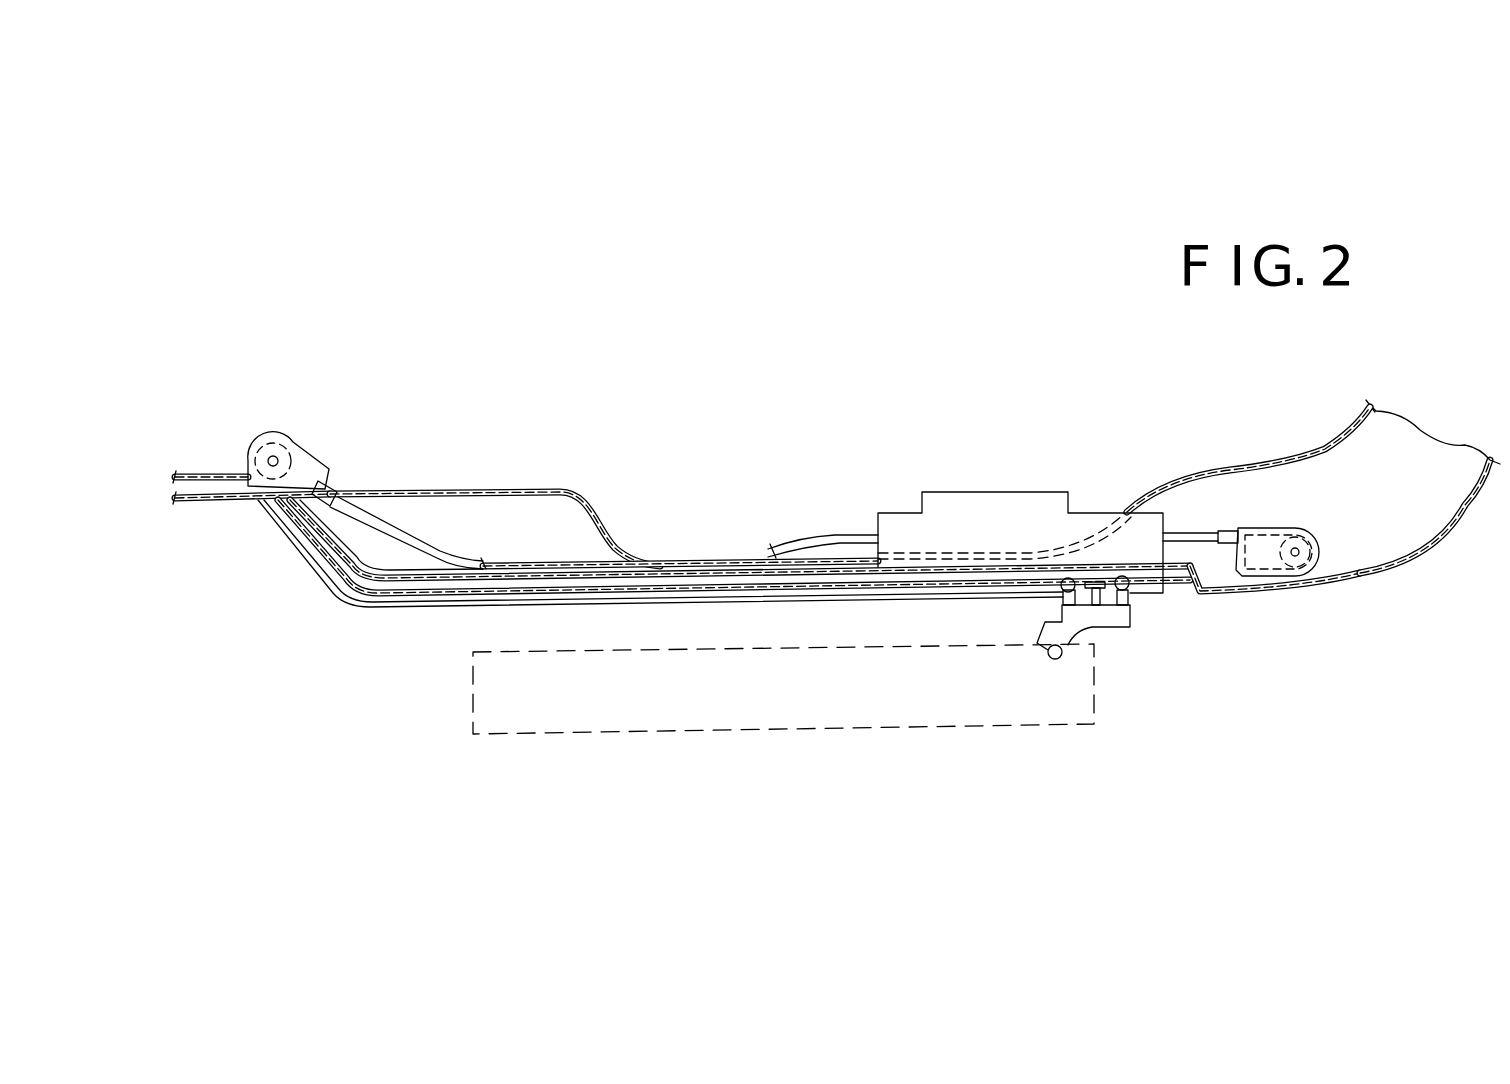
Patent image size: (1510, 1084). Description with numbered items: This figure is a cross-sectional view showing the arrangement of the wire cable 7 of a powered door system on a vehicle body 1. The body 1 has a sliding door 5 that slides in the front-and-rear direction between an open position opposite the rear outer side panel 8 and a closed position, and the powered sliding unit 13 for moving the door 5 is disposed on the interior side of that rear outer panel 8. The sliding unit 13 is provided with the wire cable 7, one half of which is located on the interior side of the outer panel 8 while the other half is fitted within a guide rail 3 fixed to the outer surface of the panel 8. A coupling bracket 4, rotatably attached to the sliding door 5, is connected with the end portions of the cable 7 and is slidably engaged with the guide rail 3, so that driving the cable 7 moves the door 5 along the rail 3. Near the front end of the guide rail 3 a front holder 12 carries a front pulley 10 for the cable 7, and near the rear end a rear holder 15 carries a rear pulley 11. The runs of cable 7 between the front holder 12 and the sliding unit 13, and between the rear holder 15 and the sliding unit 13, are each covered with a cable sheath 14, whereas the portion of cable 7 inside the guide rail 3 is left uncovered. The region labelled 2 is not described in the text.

The vehicle body 1 is at (1342, 589).
The front rod 2 is at (157, 508).
The guide rail 3 is at (668, 606).
The coupling bracket 4 is at (1108, 626).
The sliding door 5 is at (772, 729).
The wire cable 7 is at (522, 563).
The rear outer side panel 8 is at (1415, 566).
The front pulley 10 is at (257, 454).
The rear pulley 11 is at (1293, 537).
The front holder 12 is at (298, 451).
The powered sliding unit 13 is at (985, 492).
The cable sheath 14 is at (803, 541).
The rear holder 15 is at (1320, 551).